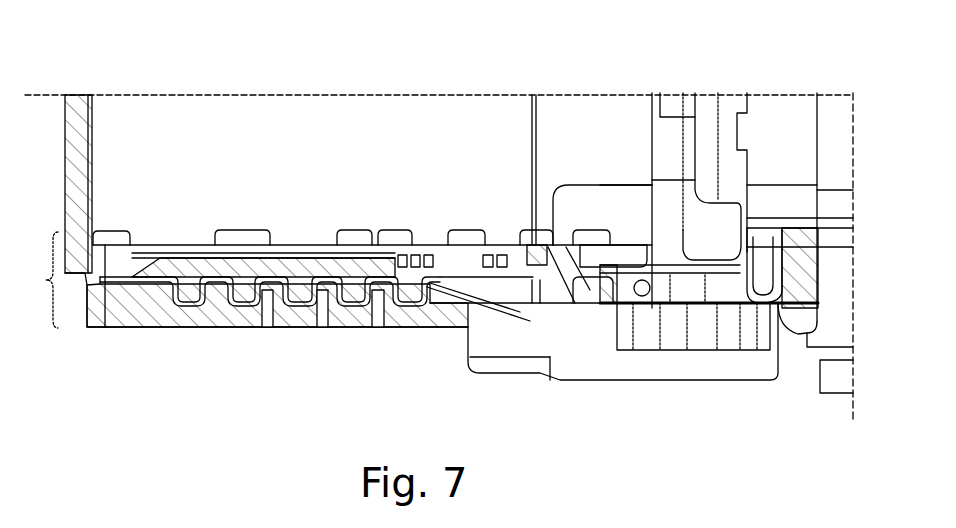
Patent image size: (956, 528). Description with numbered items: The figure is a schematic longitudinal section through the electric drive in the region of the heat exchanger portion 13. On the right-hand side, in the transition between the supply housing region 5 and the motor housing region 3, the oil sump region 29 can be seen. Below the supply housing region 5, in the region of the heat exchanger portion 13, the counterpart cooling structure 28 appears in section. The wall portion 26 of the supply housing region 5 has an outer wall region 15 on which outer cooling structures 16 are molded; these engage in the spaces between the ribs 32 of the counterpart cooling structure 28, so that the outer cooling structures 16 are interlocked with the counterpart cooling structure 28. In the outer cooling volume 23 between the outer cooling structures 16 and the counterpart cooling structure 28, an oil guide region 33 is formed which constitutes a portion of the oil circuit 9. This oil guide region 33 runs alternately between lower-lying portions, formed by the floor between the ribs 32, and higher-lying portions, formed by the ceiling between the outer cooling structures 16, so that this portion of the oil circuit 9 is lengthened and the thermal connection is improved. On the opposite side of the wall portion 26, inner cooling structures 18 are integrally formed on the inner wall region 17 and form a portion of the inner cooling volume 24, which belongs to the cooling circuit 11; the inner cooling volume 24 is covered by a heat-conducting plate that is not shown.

The motor housing region 3 is at (762, 137).
The supply housing region 5 is at (343, 138).
The oil circuit 9 is at (323, 367).
The cooling circuit 11 is at (372, 149).
The heat exchanger portion 13 is at (46, 280).
The outer wall region 15 is at (270, 326).
The outer cooling structures 16 is at (185, 305).
The inner wall region 17 is at (372, 149).
The inner cooling structures 18 is at (372, 149).
The outer cooling volume 23 is at (323, 367).
The inner cooling volume 24 is at (182, 243).
The wall portion 26 is at (158, 250).
The counterpart cooling structure 28 is at (138, 305).
The oil sump region 29 is at (670, 350).
The ribs 32 is at (343, 305).
The oil guide region 33 is at (310, 305).